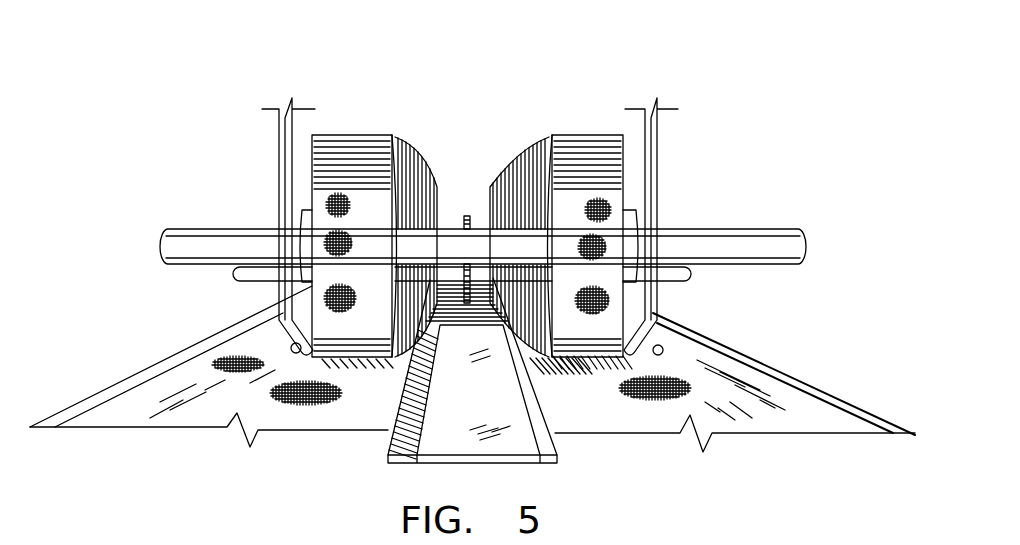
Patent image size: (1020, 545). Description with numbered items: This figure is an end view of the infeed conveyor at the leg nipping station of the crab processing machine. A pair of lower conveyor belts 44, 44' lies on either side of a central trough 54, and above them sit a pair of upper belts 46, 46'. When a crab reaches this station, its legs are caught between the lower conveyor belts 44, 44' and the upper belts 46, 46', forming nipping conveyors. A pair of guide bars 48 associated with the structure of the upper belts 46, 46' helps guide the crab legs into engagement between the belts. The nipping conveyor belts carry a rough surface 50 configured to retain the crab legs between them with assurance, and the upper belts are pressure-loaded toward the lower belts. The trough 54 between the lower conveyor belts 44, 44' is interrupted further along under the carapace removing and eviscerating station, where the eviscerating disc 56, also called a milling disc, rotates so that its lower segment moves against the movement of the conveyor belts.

The lower conveyor belt 44 is at (209, 366).
The lower conveyor belt 44' is at (735, 382).
The upper belt 46 is at (368, 197).
The upper belt 46' is at (564, 202).
The guide bar 48 is at (662, 348).
The rough surface 50 is at (347, 207).
The trough 54 is at (505, 407).
The eviscerating disc 56 is at (467, 215).